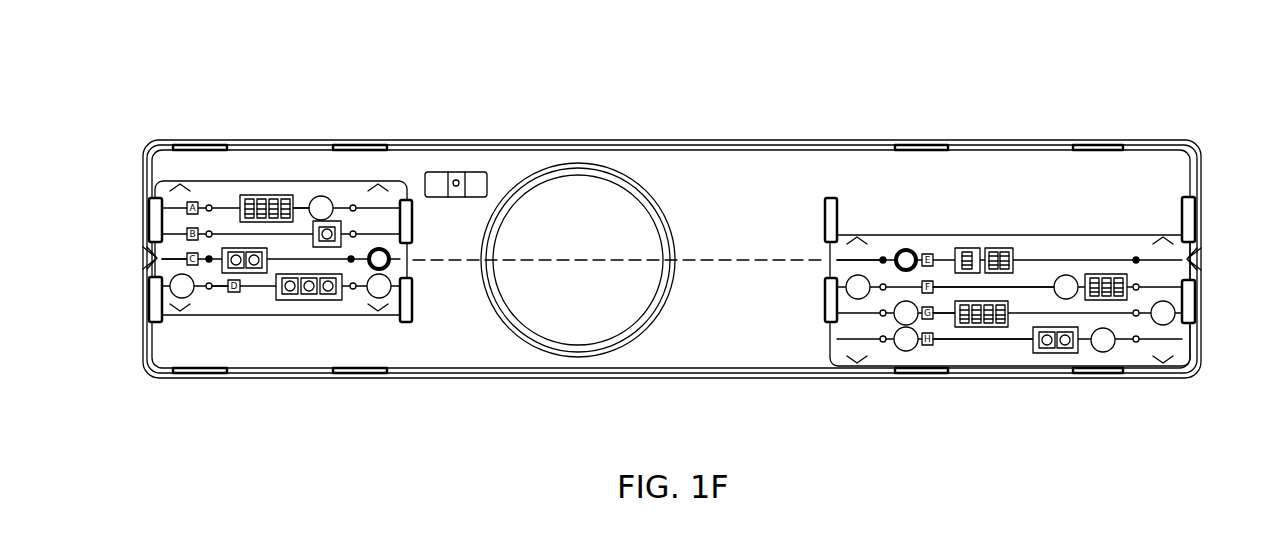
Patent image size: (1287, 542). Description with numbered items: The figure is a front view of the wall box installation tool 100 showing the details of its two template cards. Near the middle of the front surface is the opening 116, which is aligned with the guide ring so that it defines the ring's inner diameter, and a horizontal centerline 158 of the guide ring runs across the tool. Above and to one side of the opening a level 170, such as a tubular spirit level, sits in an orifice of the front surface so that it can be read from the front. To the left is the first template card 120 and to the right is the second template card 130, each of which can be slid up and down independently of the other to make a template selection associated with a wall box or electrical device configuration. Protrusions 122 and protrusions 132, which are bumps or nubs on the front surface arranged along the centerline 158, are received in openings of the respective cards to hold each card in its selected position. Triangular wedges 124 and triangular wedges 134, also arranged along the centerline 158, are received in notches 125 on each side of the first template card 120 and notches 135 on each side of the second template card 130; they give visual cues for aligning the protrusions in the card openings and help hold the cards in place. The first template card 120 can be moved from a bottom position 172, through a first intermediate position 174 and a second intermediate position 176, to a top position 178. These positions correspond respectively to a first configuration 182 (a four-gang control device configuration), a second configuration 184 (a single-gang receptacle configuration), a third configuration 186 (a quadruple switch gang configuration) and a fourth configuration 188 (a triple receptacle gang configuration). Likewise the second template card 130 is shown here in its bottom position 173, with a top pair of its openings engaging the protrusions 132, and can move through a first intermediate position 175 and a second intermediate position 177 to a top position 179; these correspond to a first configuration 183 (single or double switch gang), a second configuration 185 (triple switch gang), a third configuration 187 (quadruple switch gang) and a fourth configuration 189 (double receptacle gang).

The wall box installation tool 100 is at (99, 105).
The opening 116 is at (600, 176).
The first template card 120 is at (202, 190).
The first protrusions 122 is at (209, 250).
The triangular wedges 124 is at (155, 262).
The notches 125 is at (148, 248).
The second template card 130 is at (885, 356).
The second protrusions 132 is at (885, 251).
The triangular wedges 134 is at (822, 262).
The notches 135 is at (1193, 246).
The horizontal centerline 158 is at (686, 259).
The level 170 is at (480, 172).
The bottom position 172 is at (302, 207).
The bottom position 173 is at (872, 259).
The first intermediate position 174 is at (232, 247).
The first intermediate position 175 is at (940, 286).
The second intermediate position 176 is at (175, 261).
The second intermediate position 177 is at (943, 314).
The top position 178 is at (223, 284).
The top position 179 is at (1020, 341).
The first configuration 182 is at (270, 195).
The first configuration 183 is at (998, 247).
The second configuration 184 is at (337, 222).
The second configuration 185 is at (1112, 273).
The third configuration 186 is at (246, 274).
The third configuration 187 is at (978, 328).
The fourth configuration 188 is at (310, 301).
The fourth configuration 189 is at (1060, 354).